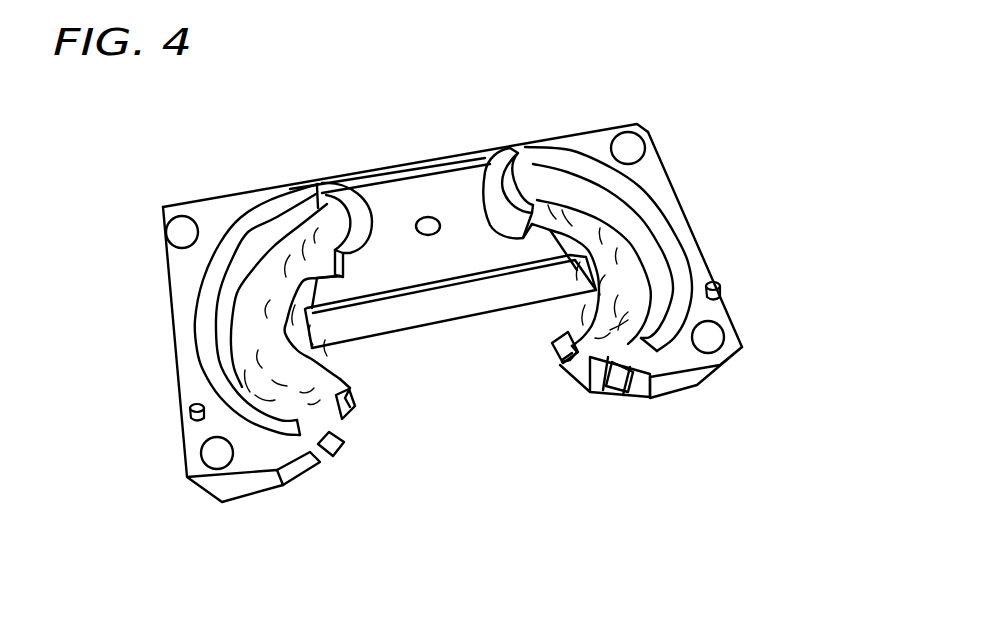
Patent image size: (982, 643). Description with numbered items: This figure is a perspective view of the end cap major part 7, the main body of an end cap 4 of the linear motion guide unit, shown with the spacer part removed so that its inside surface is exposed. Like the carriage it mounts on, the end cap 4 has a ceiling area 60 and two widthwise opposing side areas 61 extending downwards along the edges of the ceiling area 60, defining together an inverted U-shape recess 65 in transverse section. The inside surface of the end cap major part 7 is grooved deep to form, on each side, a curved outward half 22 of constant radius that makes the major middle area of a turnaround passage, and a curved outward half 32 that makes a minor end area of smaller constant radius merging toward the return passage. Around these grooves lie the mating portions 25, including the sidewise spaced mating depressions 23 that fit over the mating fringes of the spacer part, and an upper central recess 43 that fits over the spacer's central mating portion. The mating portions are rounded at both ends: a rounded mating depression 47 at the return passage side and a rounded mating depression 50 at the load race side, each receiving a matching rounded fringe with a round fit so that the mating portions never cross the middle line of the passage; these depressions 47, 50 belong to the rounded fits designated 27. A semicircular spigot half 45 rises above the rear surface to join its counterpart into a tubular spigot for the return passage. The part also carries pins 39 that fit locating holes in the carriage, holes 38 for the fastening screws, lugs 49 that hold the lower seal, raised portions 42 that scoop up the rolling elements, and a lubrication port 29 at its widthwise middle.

The end cap 4 is at (677, 164).
The end cap major part 7 is at (700, 265).
The curved outward half 22 is at (250, 331).
The mating depression 23 is at (247, 222).
The mating portion 25 is at (392, 256).
The clamp member 27 is at (491, 314).
The lubrication port 29 is at (431, 232).
The curved outward half 32 is at (352, 195).
The hole 38 is at (181, 233).
The pin 39 is at (190, 418).
The raised portion 42 is at (352, 410).
The upper central recess 43 is at (411, 200).
The spigot half 45 is at (345, 190).
The rounded mating depression 47 is at (316, 205).
The lug 49 is at (317, 463).
The rounded mating depression 50 is at (277, 425).
The ceiling area 60 is at (262, 198).
The side area 61 is at (690, 242).
The inverted U-shape recess 65 is at (403, 317).